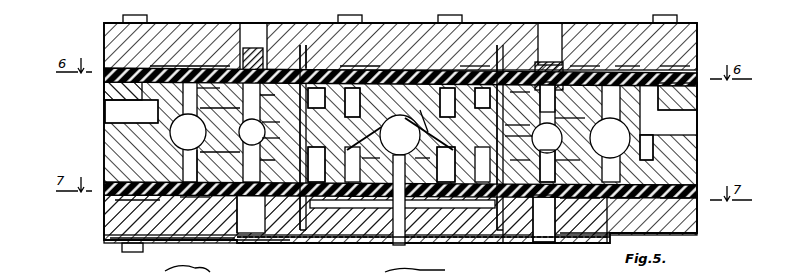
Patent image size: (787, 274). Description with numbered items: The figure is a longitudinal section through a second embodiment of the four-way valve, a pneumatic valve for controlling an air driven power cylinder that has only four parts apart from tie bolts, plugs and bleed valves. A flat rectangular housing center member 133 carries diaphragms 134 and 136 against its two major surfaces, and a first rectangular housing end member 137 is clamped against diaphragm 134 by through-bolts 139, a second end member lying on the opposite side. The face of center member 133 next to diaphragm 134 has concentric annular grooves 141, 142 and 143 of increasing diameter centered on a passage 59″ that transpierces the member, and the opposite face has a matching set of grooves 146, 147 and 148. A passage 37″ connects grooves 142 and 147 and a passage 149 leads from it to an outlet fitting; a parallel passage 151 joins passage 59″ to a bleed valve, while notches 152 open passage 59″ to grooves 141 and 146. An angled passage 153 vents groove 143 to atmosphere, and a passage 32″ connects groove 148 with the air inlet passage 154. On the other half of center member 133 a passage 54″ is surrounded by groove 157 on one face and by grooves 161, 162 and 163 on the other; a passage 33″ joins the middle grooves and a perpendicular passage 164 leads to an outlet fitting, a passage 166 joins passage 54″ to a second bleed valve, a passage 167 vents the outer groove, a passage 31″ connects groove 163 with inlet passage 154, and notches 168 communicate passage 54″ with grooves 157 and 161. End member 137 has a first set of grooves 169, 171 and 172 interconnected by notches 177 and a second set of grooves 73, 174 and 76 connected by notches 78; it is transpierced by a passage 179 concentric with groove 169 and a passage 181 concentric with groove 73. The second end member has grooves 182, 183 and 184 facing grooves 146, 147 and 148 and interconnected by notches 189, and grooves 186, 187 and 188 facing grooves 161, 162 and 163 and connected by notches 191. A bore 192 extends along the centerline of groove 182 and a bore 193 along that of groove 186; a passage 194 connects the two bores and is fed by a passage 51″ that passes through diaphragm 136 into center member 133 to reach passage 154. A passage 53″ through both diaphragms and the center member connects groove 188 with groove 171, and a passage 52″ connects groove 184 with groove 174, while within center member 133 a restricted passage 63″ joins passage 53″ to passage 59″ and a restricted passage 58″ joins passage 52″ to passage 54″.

The through-bolts 139 is at (123, 18).
The passage 179 is at (245, 27).
The groove 169 is at (300, 50).
The first rectangular housing end member 137 is at (505, 24).
The passage 181 is at (540, 30).
The notches 177 is at (203, 66).
The groove 171 is at (320, 66).
The groove 172 is at (365, 52).
The groove 174 is at (475, 66).
The groove 73 is at (572, 67).
The notches 78 is at (620, 70).
The groove 76 is at (672, 57).
The diaphragm 134 is at (697, 80).
The angled passage 153 is at (105, 105).
The passage 167 is at (697, 110).
The housing center member 133 is at (697, 136).
The diaphragm 136 is at (700, 190).
The annular groove 141 is at (211, 96).
The passage 149 is at (200, 140).
The passage 151 is at (253, 132).
The notches 152 is at (273, 128).
The annular groove 146 is at (200, 155).
The annular groove 142 is at (320, 108).
The annular groove 147 is at (318, 155).
The annular groove 148 is at (350, 147).
The annular groove 143 is at (350, 95).
The annular groove 157 is at (440, 95).
The air inlet passage 154 is at (414, 143).
The annular groove 162 is at (442, 150).
The restricted passage 58 is at (476, 107).
The notches 168 is at (519, 100).
The passage 166 is at (535, 144).
The passage 52 is at (518, 161).
The perpendicular passage 164 is at (556, 152).
The annular groove 161 is at (571, 165).
The annular groove 163 is at (653, 145).
The annular groove 184 is at (137, 209).
The annular groove 183 is at (200, 205).
The notches 189 is at (172, 227).
The annular groove 182 is at (237, 212).
The bore 192 is at (262, 241).
The passage 194 is at (318, 243).
The annular groove 186 is at (512, 240).
The bore 193 is at (553, 242).
The notches 191 is at (596, 210).
The annular groove 188 is at (648, 204).
The annular groove 187 is at (585, 231).
The passage 59 is at (243, 112).
The restricted passage 63 is at (273, 114).
The passage 37 is at (220, 147).
The passage 53 is at (273, 145).
The passage 31 is at (425, 132).
The passage 32 is at (375, 165).
The passage 51 is at (421, 165).
The passage 54 is at (550, 124).
The passage 33 is at (610, 138).